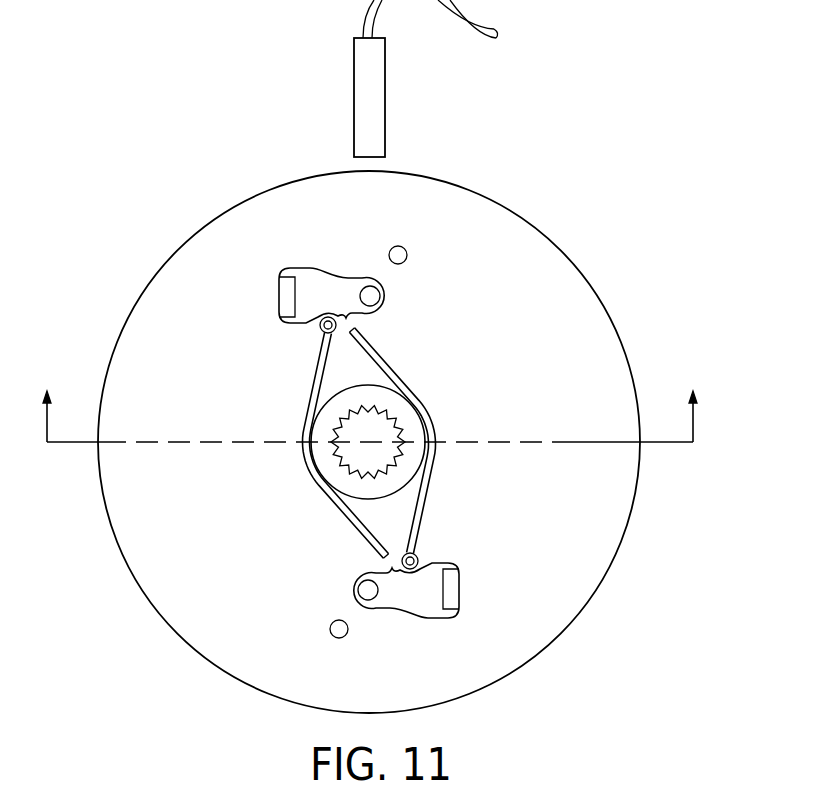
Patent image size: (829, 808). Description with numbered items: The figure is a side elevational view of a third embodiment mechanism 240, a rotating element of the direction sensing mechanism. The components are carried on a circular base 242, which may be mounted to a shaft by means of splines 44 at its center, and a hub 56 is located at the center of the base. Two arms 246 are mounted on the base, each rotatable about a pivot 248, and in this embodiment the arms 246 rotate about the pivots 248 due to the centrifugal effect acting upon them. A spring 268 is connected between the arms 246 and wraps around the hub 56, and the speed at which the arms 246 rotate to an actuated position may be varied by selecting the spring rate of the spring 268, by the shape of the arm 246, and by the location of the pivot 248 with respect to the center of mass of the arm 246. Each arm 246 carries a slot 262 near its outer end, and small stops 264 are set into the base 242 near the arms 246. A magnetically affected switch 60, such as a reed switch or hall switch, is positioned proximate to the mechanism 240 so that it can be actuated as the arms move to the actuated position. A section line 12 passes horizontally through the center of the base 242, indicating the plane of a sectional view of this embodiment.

The section line 12- 12 is at (368, 403).
The splines 44 is at (380, 407).
The hub 56 is at (360, 510).
The switch 60 is at (353, 97).
The third embodiment mechanism 240 is at (619, 151).
The disc / plate 242 is at (208, 520).
The arms 246 is at (330, 290).
The pivots 248 is at (368, 290).
The slot 262 is at (285, 297).
The mounting hole 264 is at (404, 250).
The spring 268 is at (312, 380).